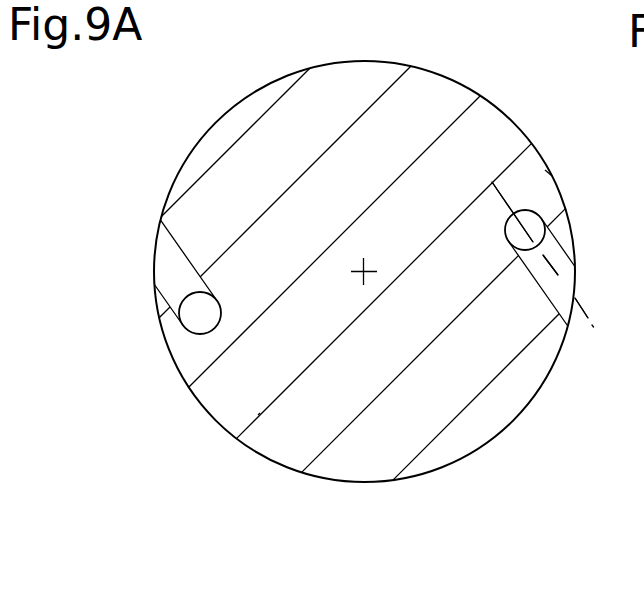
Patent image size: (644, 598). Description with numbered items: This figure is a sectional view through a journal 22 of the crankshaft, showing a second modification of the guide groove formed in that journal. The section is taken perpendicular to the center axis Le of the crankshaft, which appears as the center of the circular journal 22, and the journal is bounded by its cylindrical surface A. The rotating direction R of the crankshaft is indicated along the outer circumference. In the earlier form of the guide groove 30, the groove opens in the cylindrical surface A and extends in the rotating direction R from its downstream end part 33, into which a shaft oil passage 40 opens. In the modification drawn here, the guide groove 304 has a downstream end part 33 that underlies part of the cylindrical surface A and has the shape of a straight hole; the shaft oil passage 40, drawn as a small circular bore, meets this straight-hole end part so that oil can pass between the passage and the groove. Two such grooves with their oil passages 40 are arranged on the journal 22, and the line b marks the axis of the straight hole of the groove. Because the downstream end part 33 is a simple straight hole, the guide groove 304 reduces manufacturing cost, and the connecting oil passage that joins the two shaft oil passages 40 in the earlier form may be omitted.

The journal 22 is at (292, 112).
The guide groove 30 is at (569, 266).
The guide groove 304 is at (171, 268).
The downstream end part 33 is at (553, 252).
The shaft oil passage 40 is at (212, 320).
The center axis Le is at (356, 270).
The cylindrical surface A is at (552, 178).
The groove center line b is at (506, 183).
The rotating direction R is at (269, 416).